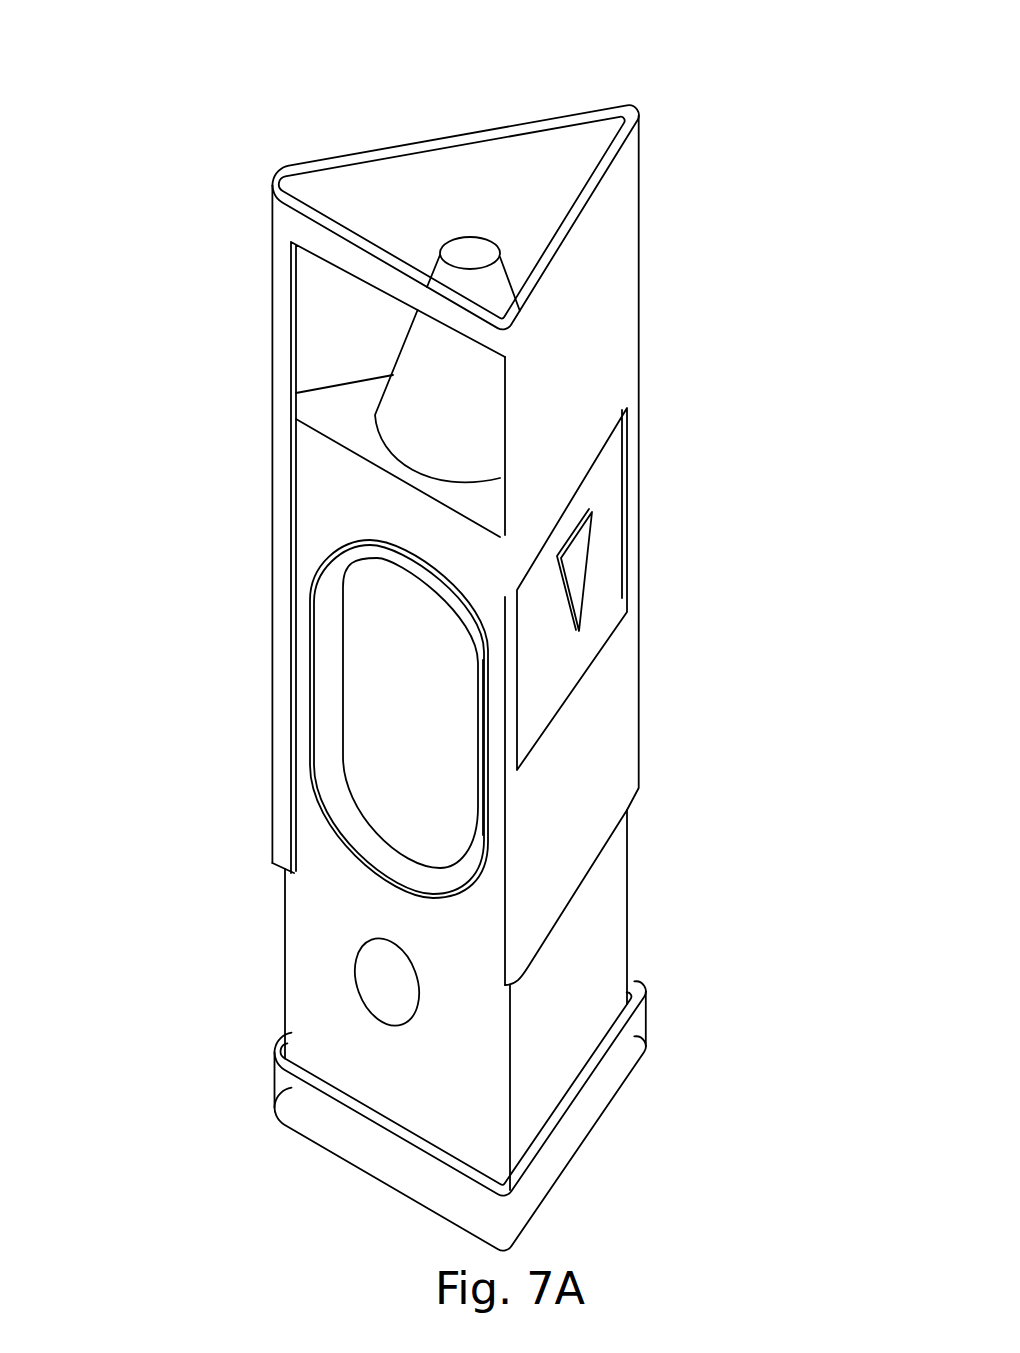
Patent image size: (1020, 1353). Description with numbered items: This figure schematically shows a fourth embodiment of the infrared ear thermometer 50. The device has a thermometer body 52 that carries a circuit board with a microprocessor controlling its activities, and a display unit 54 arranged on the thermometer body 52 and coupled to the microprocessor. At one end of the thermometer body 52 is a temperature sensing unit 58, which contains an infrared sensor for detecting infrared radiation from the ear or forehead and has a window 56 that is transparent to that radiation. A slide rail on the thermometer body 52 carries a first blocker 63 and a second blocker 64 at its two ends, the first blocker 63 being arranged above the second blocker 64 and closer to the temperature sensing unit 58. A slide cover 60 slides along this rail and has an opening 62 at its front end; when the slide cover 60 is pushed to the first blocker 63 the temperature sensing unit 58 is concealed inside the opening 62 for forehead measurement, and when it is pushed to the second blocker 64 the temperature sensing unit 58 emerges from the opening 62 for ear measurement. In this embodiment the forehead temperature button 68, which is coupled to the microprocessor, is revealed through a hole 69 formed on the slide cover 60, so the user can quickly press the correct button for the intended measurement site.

The infrared ear thermometer 50 is at (193, 163).
The thermometer body 52 is at (303, 522).
The display unit 54 is at (428, 675).
The window 56 is at (472, 247).
The temperature sensing unit 58 is at (422, 400).
The slide cover 60 is at (576, 397).
The opening 62 is at (570, 184).
The first blocker 63 is at (578, 887).
The second blocker 64 is at (578, 1098).
The forehead temperature button 68 is at (577, 567).
The hole 69 is at (557, 699).